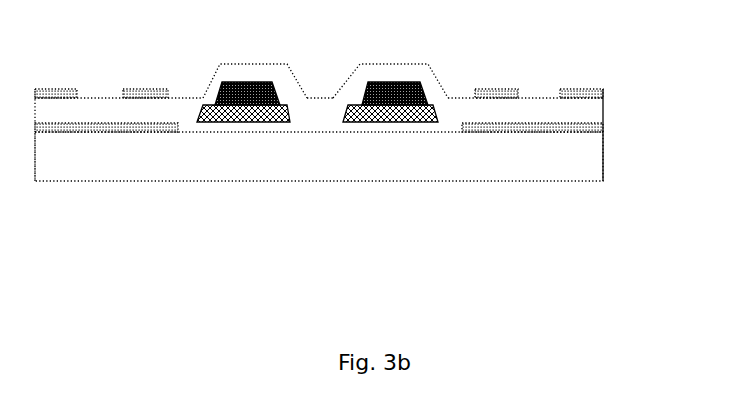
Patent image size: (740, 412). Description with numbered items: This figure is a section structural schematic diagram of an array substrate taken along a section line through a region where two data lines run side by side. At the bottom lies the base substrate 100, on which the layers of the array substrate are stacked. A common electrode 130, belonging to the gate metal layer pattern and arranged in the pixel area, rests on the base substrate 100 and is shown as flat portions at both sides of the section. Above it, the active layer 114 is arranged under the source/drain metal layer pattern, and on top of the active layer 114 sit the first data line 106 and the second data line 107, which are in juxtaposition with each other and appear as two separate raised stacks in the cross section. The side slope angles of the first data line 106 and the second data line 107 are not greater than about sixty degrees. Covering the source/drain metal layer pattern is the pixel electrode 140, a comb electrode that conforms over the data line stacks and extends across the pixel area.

The base substrate 100 is at (590, 168).
The common electrode 130 is at (590, 128).
The pixel electrode 140 is at (603, 91).
The first data line 106 is at (212, 88).
The active layer 114 is at (410, 122).
The second data line 107 is at (420, 122).